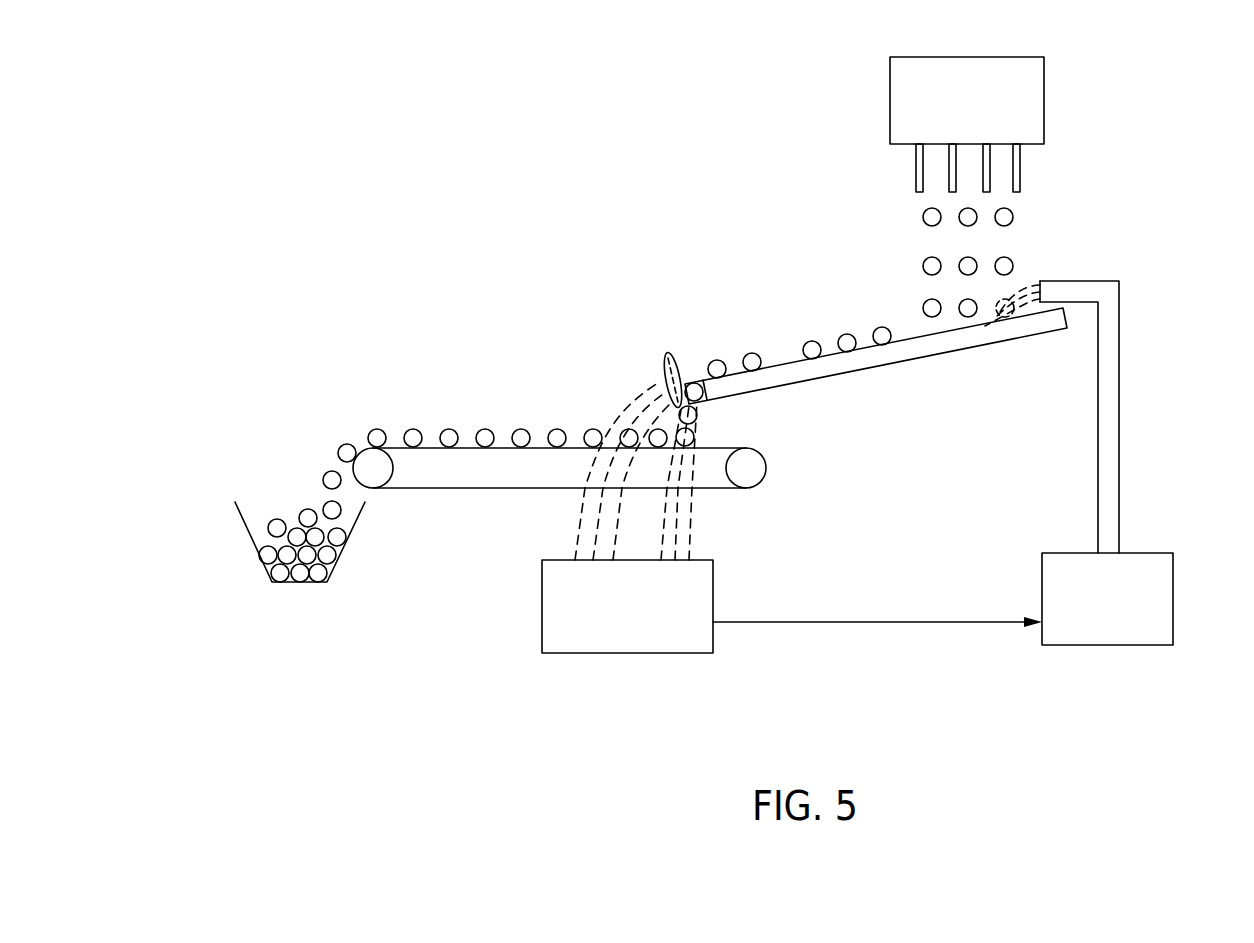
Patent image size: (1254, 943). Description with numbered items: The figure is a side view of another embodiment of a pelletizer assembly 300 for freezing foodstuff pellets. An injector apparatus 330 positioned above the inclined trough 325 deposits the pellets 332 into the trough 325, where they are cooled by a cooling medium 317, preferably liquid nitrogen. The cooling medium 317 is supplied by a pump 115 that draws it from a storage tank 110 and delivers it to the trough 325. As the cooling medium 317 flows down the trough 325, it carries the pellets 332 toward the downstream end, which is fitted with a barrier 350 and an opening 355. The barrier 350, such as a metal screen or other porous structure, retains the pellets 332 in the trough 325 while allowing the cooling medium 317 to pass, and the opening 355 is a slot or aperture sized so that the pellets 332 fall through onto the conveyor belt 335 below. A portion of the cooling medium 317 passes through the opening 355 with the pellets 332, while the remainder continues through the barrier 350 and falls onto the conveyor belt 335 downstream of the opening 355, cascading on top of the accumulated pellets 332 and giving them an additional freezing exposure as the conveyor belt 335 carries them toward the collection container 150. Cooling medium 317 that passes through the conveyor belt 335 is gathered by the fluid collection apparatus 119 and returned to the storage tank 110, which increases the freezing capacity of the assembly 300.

The pelletizer assembly 300 is at (522, 98).
The injector apparatus 330 is at (1044, 97).
The pellets 332 is at (924, 268).
The pump 115 is at (1119, 435).
The storage tank 110 is at (1122, 645).
The fluid collection apparatus 119 is at (630, 653).
The trough 325 is at (852, 373).
The opening 355 is at (692, 384).
The barrier 350 is at (666, 357).
The cooling medium 317 is at (618, 413).
The conveyor belt 335 is at (485, 490).
The collection container 150 is at (250, 529).